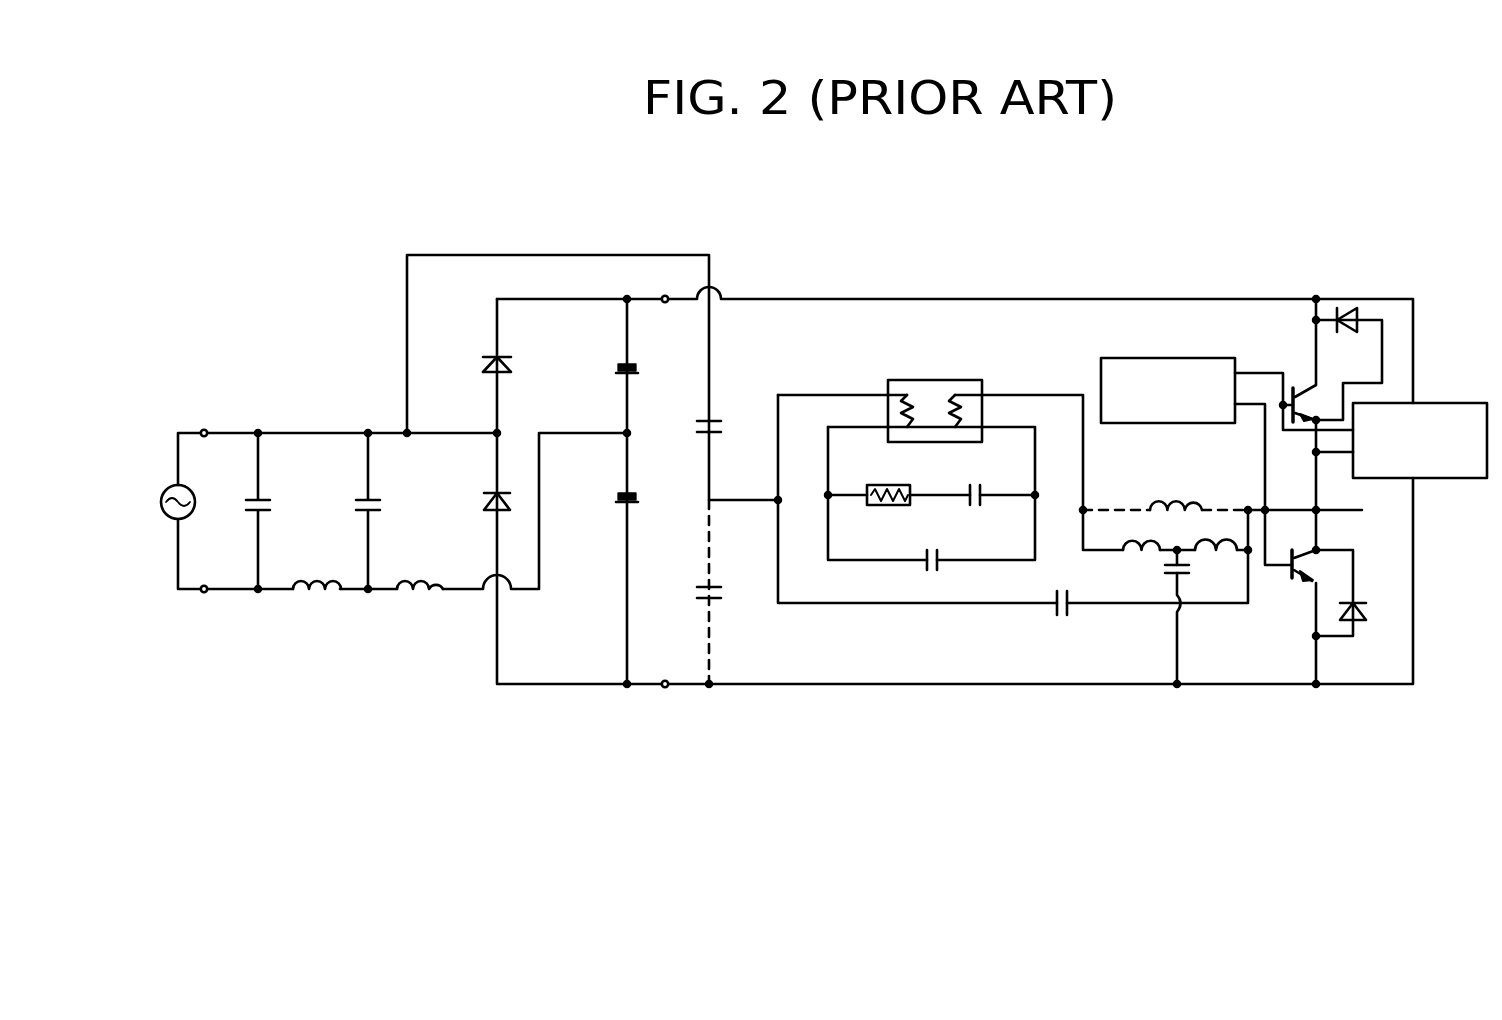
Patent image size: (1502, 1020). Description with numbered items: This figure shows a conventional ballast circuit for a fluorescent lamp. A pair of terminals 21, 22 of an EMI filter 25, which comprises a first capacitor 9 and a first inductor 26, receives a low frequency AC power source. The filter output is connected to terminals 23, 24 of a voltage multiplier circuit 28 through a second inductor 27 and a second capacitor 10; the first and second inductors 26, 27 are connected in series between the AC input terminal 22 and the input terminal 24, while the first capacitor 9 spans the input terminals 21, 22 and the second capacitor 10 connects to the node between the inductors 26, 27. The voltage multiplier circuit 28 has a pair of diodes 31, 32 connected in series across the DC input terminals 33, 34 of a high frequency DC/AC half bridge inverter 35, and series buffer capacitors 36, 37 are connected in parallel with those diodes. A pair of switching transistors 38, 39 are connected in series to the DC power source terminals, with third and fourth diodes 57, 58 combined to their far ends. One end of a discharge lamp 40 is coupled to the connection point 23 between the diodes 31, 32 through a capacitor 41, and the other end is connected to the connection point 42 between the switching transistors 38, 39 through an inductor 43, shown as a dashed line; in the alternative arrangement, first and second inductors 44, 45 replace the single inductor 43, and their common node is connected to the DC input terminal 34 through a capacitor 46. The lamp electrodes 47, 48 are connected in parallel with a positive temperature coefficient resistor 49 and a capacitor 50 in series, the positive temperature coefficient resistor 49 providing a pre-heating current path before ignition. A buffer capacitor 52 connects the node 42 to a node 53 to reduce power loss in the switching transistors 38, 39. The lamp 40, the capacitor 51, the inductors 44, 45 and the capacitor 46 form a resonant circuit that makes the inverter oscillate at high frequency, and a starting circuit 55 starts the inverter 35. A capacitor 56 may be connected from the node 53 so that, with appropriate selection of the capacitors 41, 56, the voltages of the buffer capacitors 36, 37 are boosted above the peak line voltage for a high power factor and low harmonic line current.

The first capacitor 9 is at (265, 513).
The second capacitor 10 is at (355, 513).
The terminal 21 is at (206, 430).
The terminal 22 is at (204, 592).
The terminal 23 is at (500, 432).
The input terminal 24 is at (632, 435).
The EMI filter 25 is at (294, 415).
The first inductor 26 is at (310, 595).
The second inductor 27 is at (415, 595).
The voltage multiplier circuit 28 is at (592, 600).
The diode 31 is at (487, 378).
The diode 32 is at (486, 497).
The DC input terminal 33 is at (666, 302).
The DC input terminal 34 is at (666, 680).
The high frequency DC/AC half bridge inverter 35 is at (1099, 290).
The buffer capacitor 36 is at (622, 365).
The buffer capacitor 37 is at (622, 495).
The switching transistor 38 is at (1308, 393).
The switching transistor 39 is at (1292, 585).
The discharge lamp 40 is at (939, 380).
The capacitor 41 is at (715, 420).
The connection point 42 is at (1248, 510).
The inductor 43 is at (1178, 505).
The first inductor 44 is at (1135, 548).
The second inductor 45 is at (1220, 570).
The capacitor 46 is at (1165, 574).
The electrode 47 is at (905, 398).
The electrode 48 is at (958, 412).
The PTC resistor 49 is at (887, 486).
The capacitor 50 is at (978, 493).
The capacitor 51 is at (940, 567).
The buffer capacitor 52 is at (1052, 606).
The node 53 is at (776, 503).
The starting circuit 55 is at (1450, 403).
The capacitor 56 is at (705, 588).
The third diode 57 is at (1362, 313).
The fourth diode 58 is at (1358, 603).